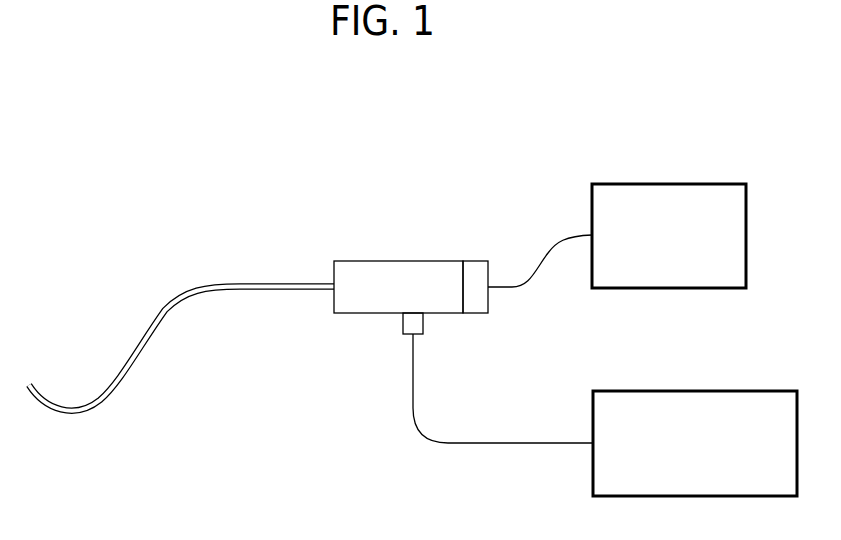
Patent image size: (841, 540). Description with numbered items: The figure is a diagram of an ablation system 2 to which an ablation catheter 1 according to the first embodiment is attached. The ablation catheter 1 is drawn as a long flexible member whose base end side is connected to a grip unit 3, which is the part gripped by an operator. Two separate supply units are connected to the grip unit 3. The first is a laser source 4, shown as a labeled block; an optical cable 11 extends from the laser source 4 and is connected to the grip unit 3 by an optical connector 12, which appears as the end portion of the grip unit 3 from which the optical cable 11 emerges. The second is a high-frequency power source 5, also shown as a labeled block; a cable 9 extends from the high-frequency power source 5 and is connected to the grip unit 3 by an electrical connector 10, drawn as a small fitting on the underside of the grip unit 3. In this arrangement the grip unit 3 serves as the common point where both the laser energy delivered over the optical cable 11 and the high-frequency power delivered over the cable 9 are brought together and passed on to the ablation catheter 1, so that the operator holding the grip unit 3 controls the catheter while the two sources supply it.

The ablation catheter 1 is at (147, 350).
The ablation system 2 is at (164, 247).
The grip unit 3 is at (413, 260).
The laser source 4 is at (667, 183).
The high-frequency power source 5 is at (669, 390).
The cable 9 is at (517, 445).
The electrical connector 10 is at (400, 325).
The optical cable 11 is at (528, 281).
The optical connector 12 is at (478, 260).